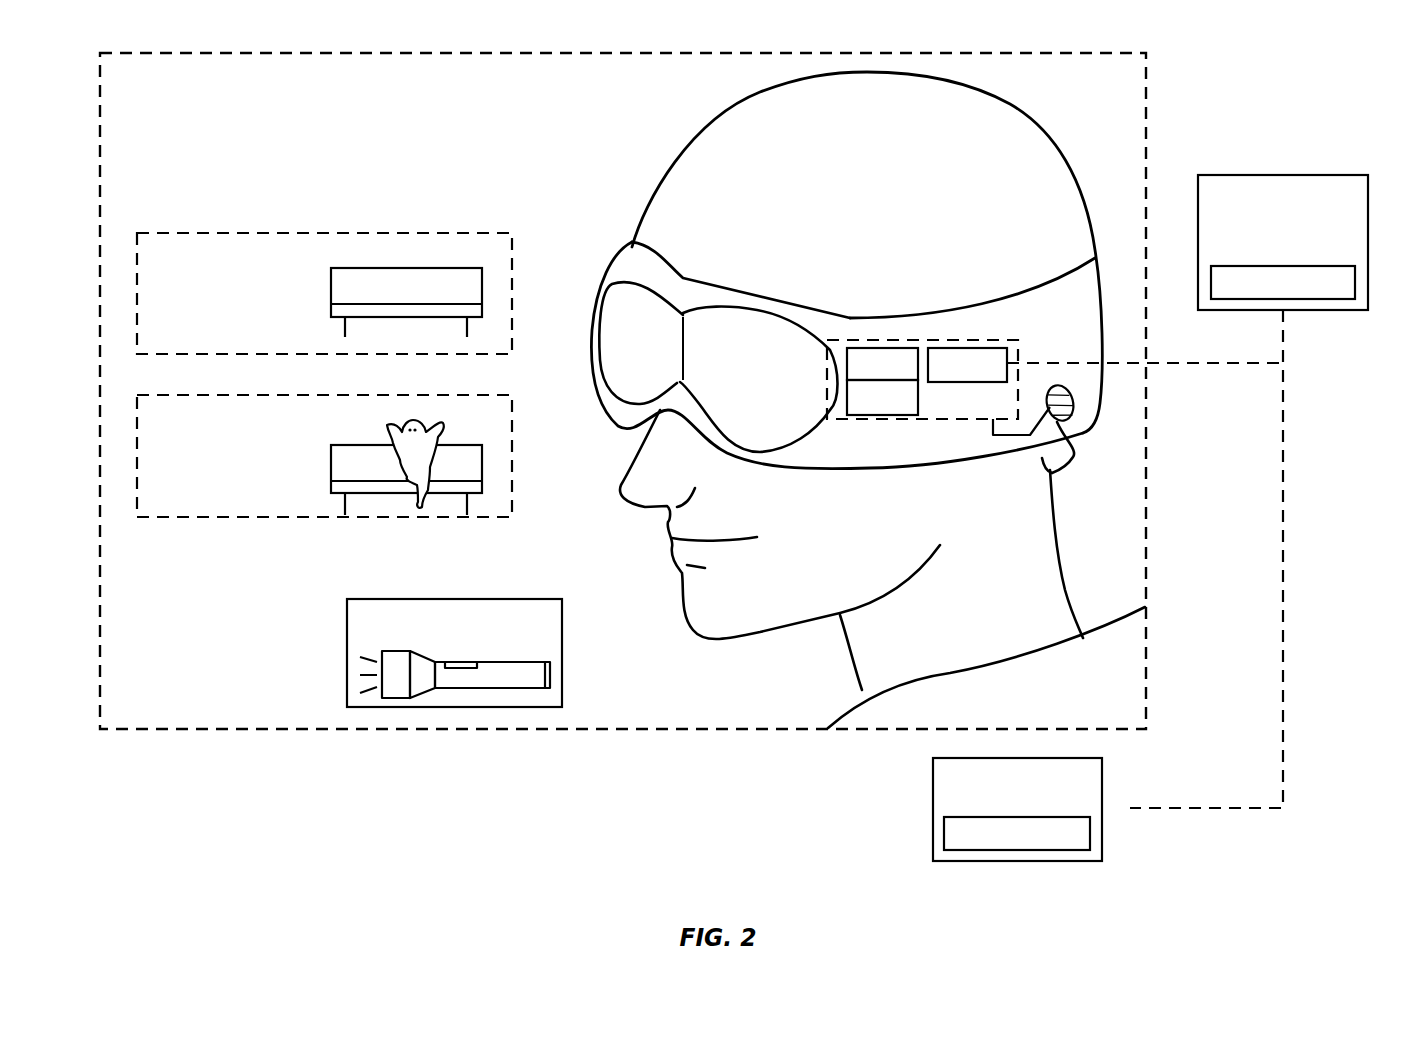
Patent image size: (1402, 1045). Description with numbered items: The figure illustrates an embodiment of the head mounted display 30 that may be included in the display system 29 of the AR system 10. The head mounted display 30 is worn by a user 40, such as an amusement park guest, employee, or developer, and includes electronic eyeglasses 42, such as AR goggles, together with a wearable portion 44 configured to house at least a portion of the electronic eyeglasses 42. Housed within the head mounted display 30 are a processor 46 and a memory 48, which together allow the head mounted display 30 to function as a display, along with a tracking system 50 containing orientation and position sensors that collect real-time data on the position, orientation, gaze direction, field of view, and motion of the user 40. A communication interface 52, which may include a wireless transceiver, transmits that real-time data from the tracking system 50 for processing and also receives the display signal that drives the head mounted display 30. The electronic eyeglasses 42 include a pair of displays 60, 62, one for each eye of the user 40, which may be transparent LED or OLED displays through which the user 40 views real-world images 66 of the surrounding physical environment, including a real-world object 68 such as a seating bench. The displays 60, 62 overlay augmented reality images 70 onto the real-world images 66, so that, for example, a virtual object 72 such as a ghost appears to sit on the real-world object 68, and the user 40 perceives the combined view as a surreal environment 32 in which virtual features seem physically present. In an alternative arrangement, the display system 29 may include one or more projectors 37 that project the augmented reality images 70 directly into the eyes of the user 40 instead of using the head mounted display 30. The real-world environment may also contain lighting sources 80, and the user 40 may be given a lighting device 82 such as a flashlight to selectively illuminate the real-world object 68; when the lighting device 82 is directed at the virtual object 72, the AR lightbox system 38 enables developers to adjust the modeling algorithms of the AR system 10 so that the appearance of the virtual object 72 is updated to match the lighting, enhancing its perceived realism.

The AR system 10 is at (933, 805).
The display system 29 is at (1285, 175).
The head mounted display 30 is at (750, 199).
The surreal environment 32 is at (622, 52).
The projectors 37 is at (1284, 266).
The AR lightbox system 38 is at (1017, 850).
The user 40 is at (1032, 117).
The electronic eyeglasses 42 is at (605, 337).
The wearable portion 44 is at (628, 242).
The processor 46 is at (883, 348).
The memory 48 is at (890, 415).
The tracking system 50 is at (1077, 450).
The communication interface 52 is at (970, 348).
The display 60 is at (635, 305).
The display 62 is at (757, 337).
The real-world images 66 is at (322, 232).
The real-world object 68 is at (408, 267).
The augmented reality images 70 is at (322, 394).
The virtual object 72 is at (443, 430).
The lighting sources 80 is at (455, 599).
The lighting device 82 is at (492, 658).